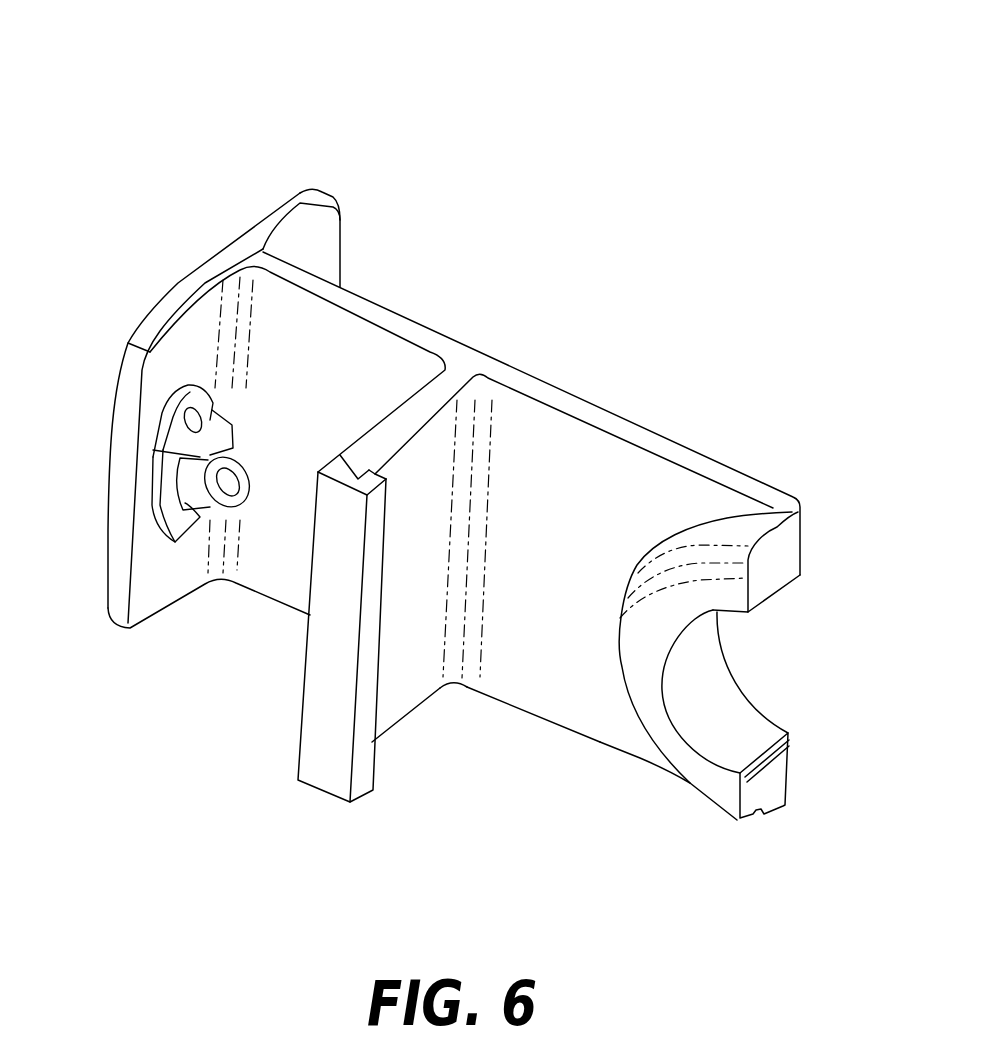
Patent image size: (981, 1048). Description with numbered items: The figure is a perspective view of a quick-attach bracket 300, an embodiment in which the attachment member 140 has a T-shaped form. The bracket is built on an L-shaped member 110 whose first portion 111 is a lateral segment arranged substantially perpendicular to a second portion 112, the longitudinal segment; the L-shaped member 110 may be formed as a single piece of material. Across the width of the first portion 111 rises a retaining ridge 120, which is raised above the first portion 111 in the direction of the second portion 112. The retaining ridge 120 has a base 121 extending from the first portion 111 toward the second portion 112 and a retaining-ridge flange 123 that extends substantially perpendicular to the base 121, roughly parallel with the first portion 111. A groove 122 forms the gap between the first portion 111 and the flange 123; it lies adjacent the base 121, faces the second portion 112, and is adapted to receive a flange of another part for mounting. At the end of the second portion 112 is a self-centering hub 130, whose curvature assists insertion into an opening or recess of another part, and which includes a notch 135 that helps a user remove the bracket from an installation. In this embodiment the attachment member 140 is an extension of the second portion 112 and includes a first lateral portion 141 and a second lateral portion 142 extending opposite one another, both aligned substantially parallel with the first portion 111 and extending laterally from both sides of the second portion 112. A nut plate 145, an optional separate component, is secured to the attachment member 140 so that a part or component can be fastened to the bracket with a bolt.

The quick-attach bracket 300 is at (118, 102).
The L-shaped member 110 is at (583, 412).
The first portion 111 is at (420, 678).
The second portion 112 is at (548, 700).
The retaining ridge 120 is at (337, 760).
The base 121 is at (343, 480).
The groove 122 is at (360, 455).
The retaining-ridge flange 123 is at (380, 476).
The self-centering hub 130 is at (712, 775).
The notch 135 is at (755, 655).
The attachment member 140 is at (383, 322).
The first lateral portion 141 is at (153, 316).
The second lateral portion 142 is at (297, 205).
The nut plate 145 is at (120, 490).